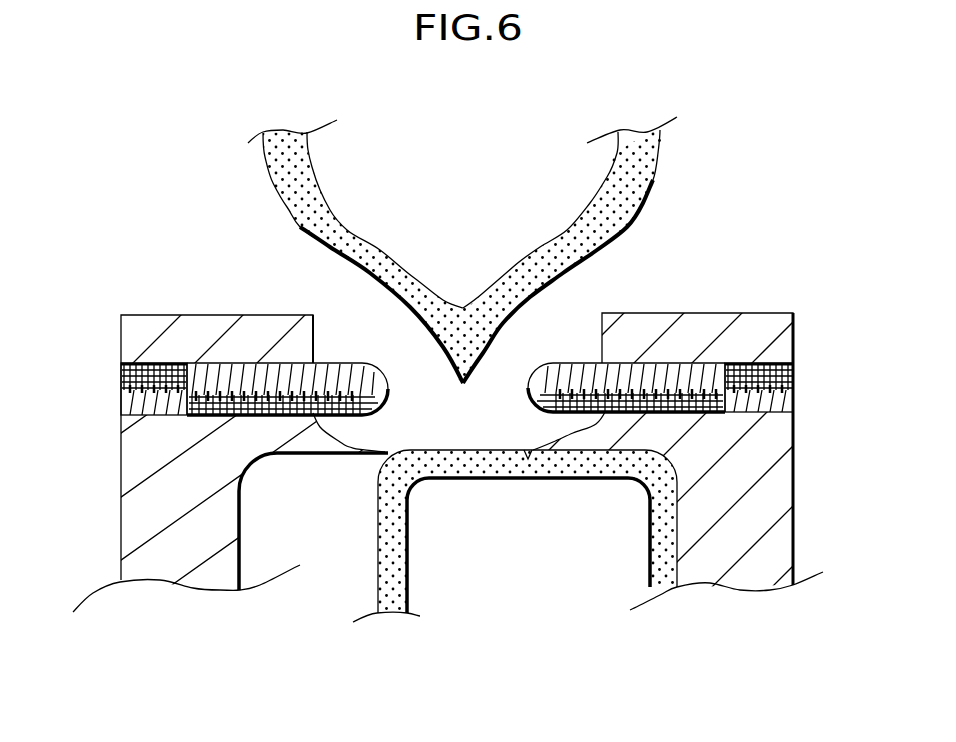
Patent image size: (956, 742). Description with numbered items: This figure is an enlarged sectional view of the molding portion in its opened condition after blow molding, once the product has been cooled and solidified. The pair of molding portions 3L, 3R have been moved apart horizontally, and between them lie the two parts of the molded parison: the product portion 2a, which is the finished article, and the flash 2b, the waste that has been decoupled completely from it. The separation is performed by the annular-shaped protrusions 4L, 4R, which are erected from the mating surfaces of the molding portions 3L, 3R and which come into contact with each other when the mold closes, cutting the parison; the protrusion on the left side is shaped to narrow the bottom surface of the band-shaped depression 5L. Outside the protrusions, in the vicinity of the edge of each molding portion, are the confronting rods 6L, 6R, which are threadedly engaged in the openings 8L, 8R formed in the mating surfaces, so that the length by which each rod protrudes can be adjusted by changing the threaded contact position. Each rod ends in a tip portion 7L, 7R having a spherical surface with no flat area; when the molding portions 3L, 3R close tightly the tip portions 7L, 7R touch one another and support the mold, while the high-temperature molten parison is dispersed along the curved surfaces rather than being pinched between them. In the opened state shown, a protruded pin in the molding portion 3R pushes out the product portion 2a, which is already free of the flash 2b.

The product portion 2a is at (388, 565).
The flash 2b is at (532, 263).
The molding portion 3L is at (140, 535).
The molding portion 3R is at (773, 543).
The annular-shaped protrusion 4L is at (355, 448).
The annular-shaped protrusion 4R is at (567, 440).
The band-shaped depression 5L is at (245, 560).
The confronting rod 6L is at (222, 386).
The confronting rod 6R is at (700, 376).
The tip portion 7L is at (372, 387).
The tip portion 7R is at (543, 373).
The opening 8L is at (148, 393).
The opening 8R is at (780, 398).